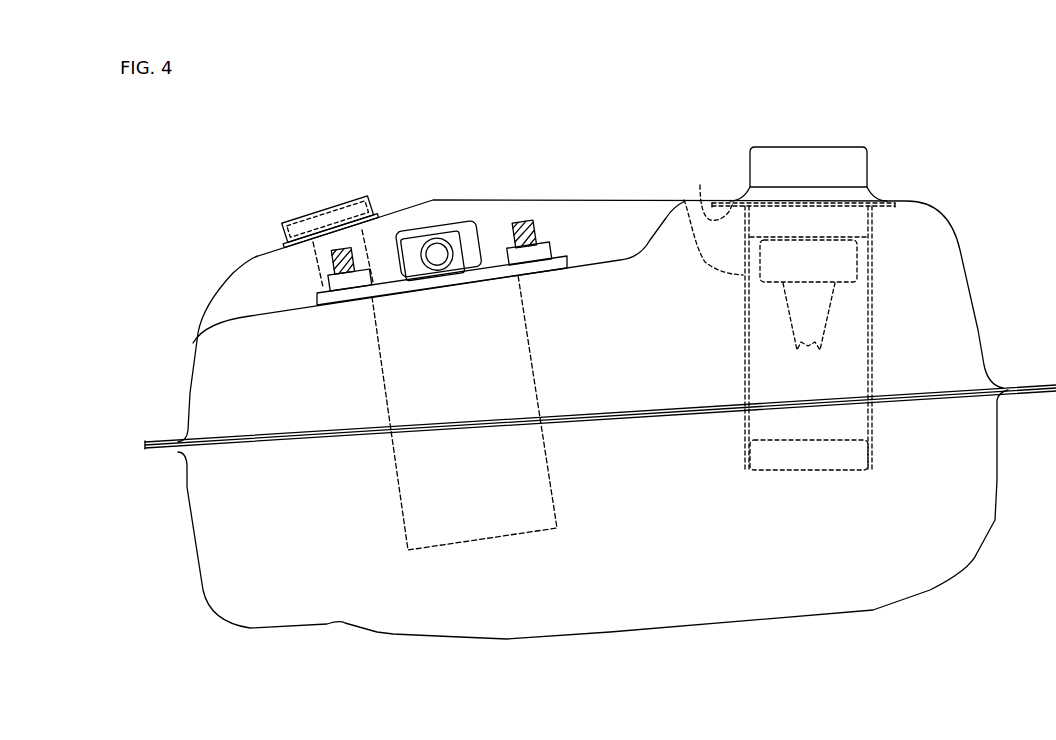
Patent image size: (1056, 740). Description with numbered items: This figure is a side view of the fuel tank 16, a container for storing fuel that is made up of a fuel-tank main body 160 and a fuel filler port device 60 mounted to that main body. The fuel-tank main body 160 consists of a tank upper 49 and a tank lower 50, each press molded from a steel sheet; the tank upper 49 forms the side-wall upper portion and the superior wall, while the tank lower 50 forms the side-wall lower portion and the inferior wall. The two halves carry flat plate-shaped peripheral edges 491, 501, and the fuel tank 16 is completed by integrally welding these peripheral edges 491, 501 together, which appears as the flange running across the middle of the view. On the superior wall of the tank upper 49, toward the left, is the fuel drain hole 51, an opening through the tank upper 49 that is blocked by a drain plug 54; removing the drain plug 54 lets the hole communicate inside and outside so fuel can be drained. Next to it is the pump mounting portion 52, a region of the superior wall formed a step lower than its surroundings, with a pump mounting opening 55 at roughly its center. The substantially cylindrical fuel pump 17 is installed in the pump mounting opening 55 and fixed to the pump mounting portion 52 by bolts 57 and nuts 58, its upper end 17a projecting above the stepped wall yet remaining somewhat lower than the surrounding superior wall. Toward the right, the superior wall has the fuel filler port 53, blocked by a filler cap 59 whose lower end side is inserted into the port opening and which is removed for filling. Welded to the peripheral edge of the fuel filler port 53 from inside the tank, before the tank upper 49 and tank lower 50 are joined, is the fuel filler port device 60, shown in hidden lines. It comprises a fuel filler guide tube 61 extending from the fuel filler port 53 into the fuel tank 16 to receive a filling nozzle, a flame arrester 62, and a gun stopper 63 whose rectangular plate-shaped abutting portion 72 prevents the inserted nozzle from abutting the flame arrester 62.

The fuel tank 16 is at (848, 260).
The fuel pump 17 is at (346, 360).
The upper end 17a is at (465, 237).
The tank upper 49 is at (210, 398).
The tank lower 50 is at (205, 480).
The fuel drain hole 51 is at (317, 206).
The pump mounting portion 52 is at (597, 260).
The fuel filler port 53 is at (872, 194).
The drain plug 54 is at (345, 203).
The pump mounting opening 55 is at (373, 295).
The bolts 57 is at (528, 220).
The nuts 58 is at (552, 247).
The filler cap 59 is at (810, 153).
The fuel filler port device 60 is at (897, 316).
The fuel filler guide tube 61 is at (700, 185).
The flame arrester 62 is at (684, 200).
The gun stopper 63 is at (860, 260).
The abutting portion 72 is at (798, 340).
The fuel-tank main body 160 is at (118, 388).
The peripheral edge 491 is at (1024, 386).
The peripheral edge 501 is at (1023, 396).